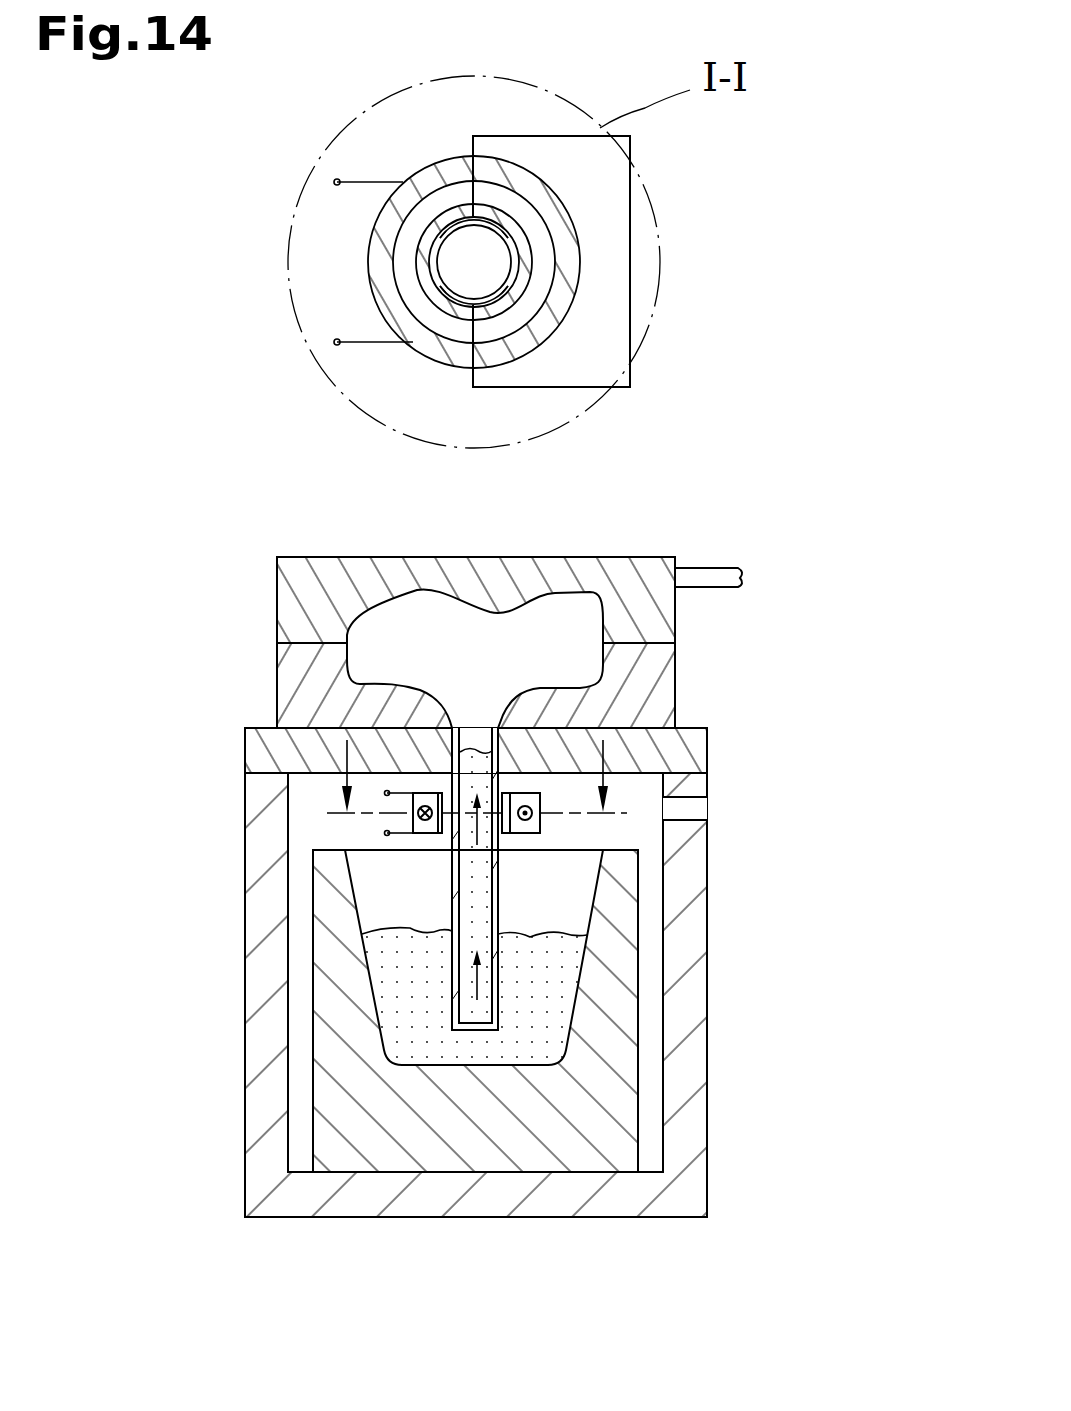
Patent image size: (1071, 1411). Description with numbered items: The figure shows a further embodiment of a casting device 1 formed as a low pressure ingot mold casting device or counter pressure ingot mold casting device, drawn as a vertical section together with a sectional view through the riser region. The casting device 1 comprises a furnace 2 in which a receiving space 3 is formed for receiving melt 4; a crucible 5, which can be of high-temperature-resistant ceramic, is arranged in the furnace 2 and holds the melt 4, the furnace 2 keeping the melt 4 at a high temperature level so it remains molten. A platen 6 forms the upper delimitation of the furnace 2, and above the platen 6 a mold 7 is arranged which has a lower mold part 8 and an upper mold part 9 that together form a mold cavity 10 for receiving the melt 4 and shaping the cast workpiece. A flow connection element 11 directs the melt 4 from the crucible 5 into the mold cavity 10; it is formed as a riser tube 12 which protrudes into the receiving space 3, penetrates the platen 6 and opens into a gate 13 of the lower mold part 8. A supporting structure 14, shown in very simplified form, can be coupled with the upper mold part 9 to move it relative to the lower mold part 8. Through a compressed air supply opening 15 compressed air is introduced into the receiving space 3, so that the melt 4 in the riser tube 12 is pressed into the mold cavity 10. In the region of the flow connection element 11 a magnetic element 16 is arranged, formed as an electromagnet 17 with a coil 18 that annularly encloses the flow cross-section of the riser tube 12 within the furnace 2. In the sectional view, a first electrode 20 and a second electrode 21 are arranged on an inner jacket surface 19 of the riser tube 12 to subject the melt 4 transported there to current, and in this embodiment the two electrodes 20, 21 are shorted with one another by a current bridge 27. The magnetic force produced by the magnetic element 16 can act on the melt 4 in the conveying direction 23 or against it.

The casting device 1 is at (858, 519).
The furnace 2 is at (755, 1023).
The receiving space 3 is at (578, 897).
The melt 4 is at (480, 908).
The crucible 5 is at (613, 1140).
The platen 6 is at (695, 740).
The mold 7 is at (657, 510).
The lower mold part 8 is at (297, 663).
The upper mold part 9 is at (287, 583).
The mold cavity 10 is at (398, 605).
The flow connection element 11 is at (415, 887).
The riser tube 12 is at (453, 918).
The gate 13 is at (530, 710).
The supporting structure 14 is at (717, 573).
The compressed air supply opening 15 is at (702, 808).
The magnetic element 16 is at (320, 801).
The electromagnet 17 is at (354, 832).
The coil 18 is at (414, 795).
The inner jacket surface 19 is at (505, 268).
The first electrode 20 is at (458, 218).
The second electrode 21 is at (445, 293).
The conveying direction 23 is at (473, 981).
The current bridge 27 is at (632, 272).